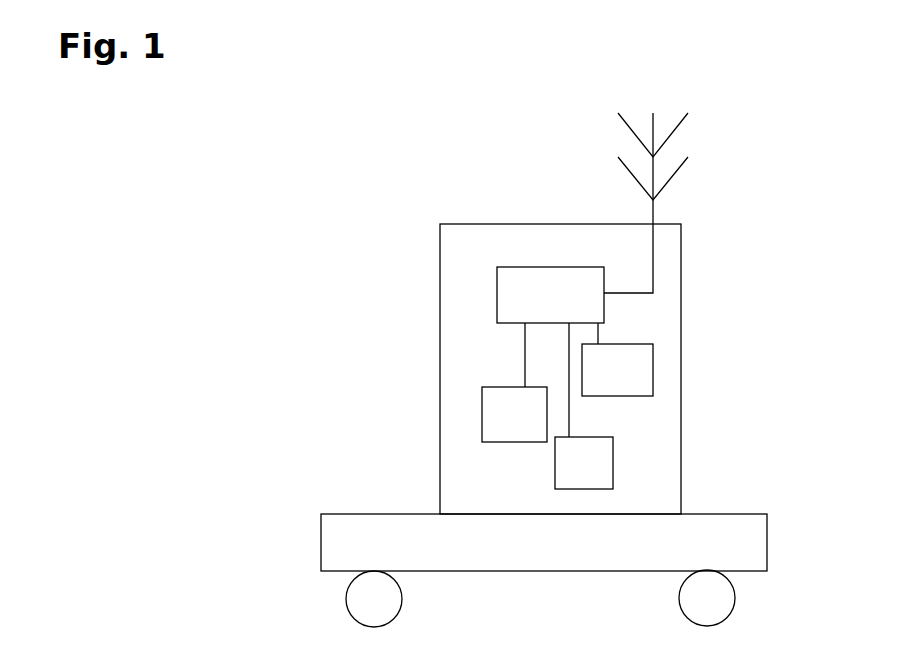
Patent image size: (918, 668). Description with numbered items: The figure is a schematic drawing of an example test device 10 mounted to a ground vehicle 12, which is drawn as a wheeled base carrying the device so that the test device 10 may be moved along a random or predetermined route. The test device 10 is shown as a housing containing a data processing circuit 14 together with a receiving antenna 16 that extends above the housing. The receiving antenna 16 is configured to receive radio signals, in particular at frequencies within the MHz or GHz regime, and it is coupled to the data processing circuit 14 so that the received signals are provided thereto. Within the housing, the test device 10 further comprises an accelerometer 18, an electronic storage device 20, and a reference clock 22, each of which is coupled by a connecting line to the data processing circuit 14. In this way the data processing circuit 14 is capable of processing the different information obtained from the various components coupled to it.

The test device 10 is at (440, 227).
The ground vehicle 12 is at (349, 514).
The data processing circuit 14 is at (577, 267).
The receiving antenna 16 is at (678, 125).
The accelerometer 18 is at (482, 413).
The electronic storage device 20 is at (653, 370).
The reference clock 22 is at (613, 462).